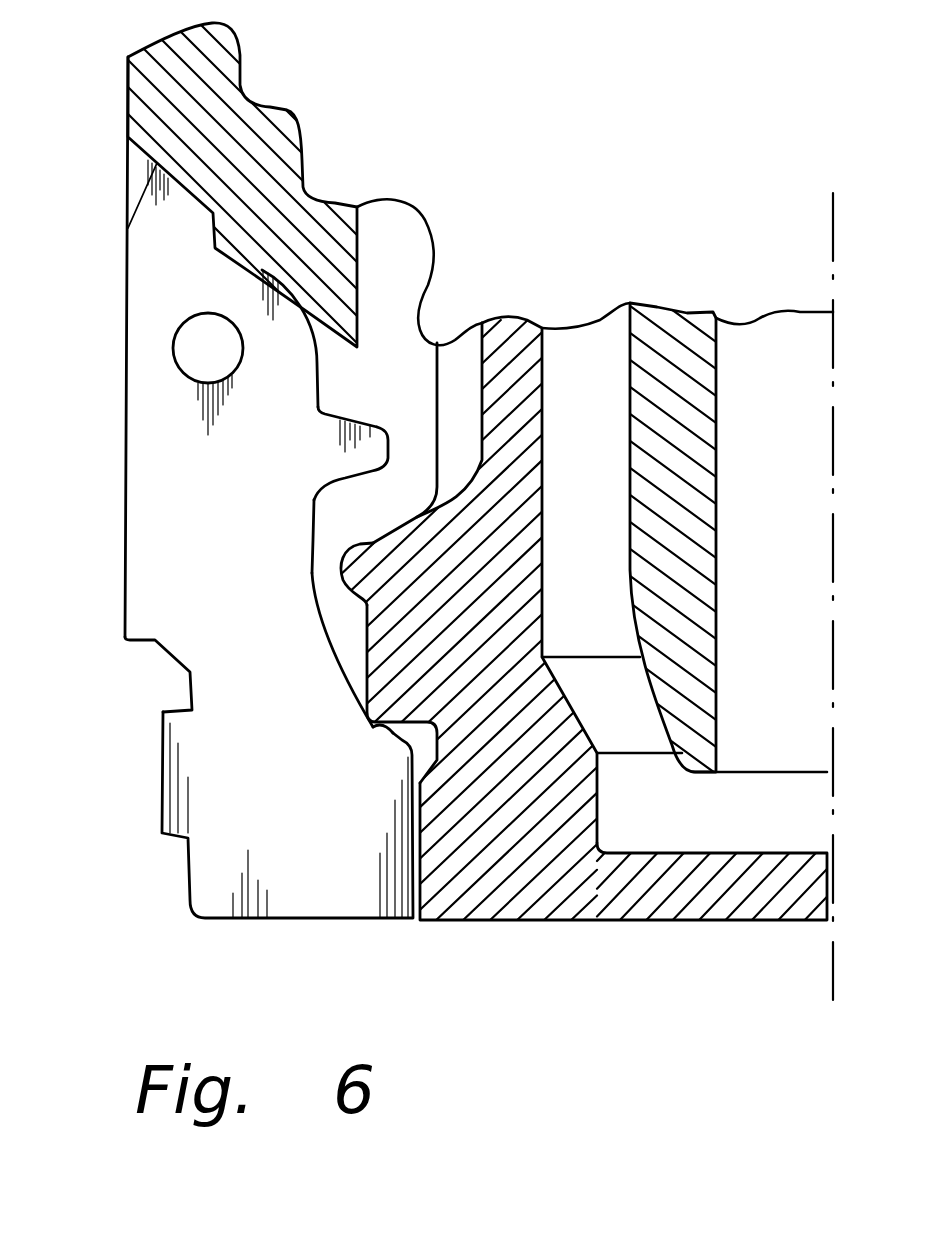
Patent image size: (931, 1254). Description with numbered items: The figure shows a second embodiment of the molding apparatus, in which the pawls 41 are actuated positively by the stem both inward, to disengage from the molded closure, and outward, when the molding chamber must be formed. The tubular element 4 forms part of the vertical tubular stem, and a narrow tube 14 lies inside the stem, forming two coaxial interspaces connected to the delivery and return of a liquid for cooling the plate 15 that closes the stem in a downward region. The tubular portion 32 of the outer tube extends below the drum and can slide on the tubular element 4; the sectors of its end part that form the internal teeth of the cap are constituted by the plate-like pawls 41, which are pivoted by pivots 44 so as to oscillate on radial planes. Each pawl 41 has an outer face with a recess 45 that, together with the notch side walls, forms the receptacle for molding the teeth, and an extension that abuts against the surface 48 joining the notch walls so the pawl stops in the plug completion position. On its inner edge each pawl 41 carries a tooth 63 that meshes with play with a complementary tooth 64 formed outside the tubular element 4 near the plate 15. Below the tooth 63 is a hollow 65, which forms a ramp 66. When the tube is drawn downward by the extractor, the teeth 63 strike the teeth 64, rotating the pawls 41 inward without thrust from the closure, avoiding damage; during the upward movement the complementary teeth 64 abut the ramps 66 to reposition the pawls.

The tubular element 4 is at (510, 347).
The narrow tube 14 is at (665, 353).
The plate 15 is at (548, 880).
The tubular portion 32 is at (242, 133).
The pawls 41 is at (320, 805).
The pivots 44 is at (198, 343).
The recess 45 is at (177, 673).
The surface 48 is at (196, 214).
The tooth 63 is at (372, 423).
The complementary tooth 64 is at (357, 572).
The hollow 65 is at (314, 515).
The ramp 66 is at (384, 736).